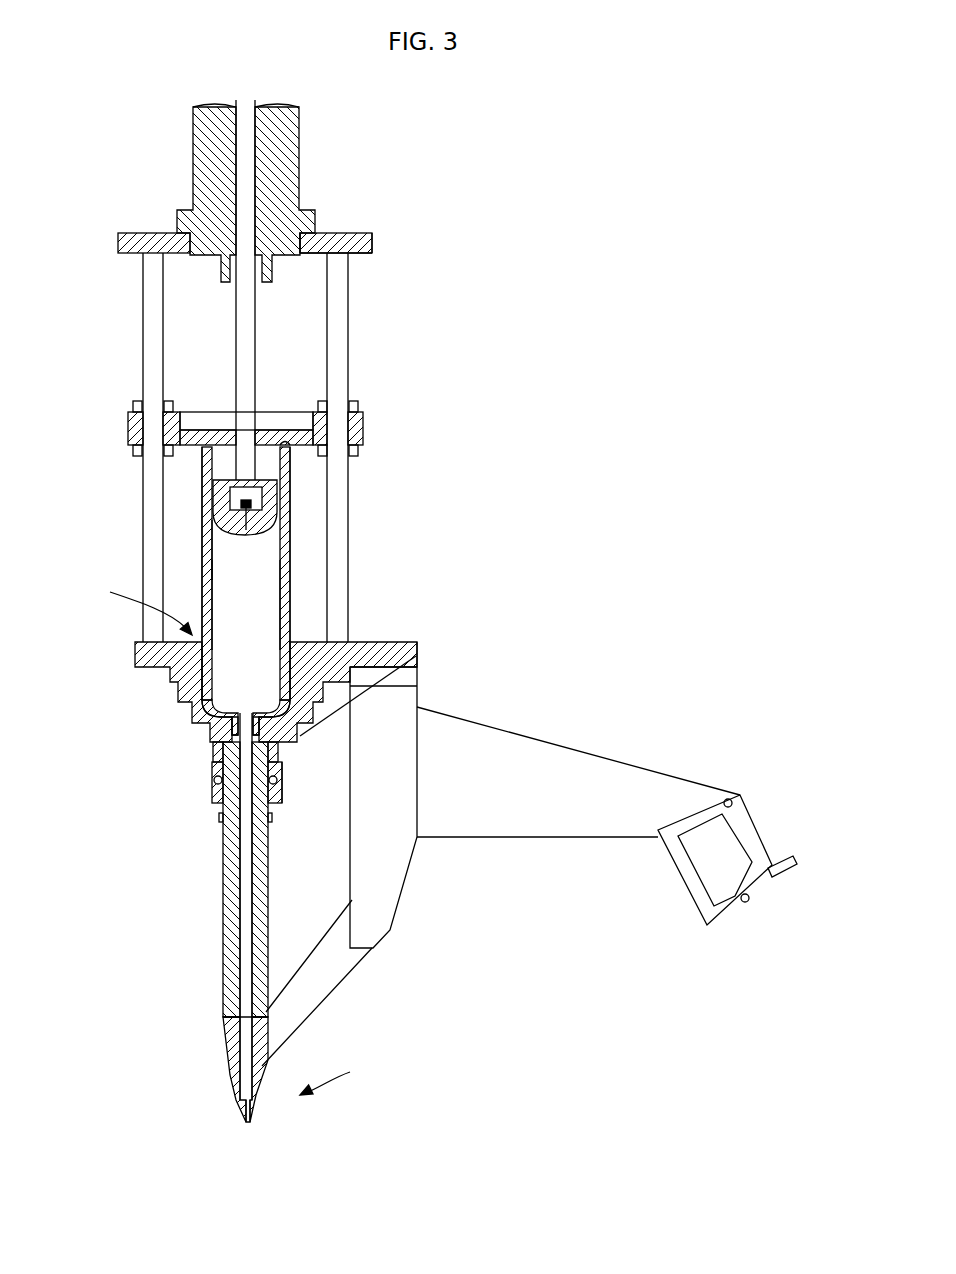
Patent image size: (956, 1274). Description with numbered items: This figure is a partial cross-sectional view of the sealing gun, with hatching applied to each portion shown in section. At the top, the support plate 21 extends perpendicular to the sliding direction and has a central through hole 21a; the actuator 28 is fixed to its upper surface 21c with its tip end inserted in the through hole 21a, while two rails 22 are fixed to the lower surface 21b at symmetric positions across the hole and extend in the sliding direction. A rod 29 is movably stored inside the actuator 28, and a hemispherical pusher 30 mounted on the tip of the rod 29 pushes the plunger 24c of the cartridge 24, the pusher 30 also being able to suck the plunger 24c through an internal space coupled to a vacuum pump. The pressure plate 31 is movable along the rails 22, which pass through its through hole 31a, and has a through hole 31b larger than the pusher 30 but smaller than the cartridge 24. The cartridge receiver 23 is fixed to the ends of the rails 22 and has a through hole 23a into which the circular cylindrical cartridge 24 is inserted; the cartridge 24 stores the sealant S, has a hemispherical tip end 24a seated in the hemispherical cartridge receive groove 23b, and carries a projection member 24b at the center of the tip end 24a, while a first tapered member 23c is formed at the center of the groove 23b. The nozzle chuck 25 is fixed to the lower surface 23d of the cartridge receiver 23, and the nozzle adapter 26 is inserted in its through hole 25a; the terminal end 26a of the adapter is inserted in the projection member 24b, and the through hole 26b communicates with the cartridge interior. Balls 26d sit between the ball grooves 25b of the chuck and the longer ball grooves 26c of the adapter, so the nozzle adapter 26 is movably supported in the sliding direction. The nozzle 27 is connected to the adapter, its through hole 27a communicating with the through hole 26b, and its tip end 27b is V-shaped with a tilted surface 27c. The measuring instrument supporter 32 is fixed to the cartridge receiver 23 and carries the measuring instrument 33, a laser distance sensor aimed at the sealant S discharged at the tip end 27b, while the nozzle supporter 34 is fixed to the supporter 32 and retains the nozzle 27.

The support plate 21 is at (135, 233).
The through hole 21a is at (301, 240).
The lower surface 21b is at (372, 254).
The upper surface 21c is at (372, 236).
The rails 22 is at (143, 400).
The cartridge receiver 23 is at (136, 656).
The through hole 23a is at (127, 604).
The cartridge receive groove 23b is at (362, 682).
The first tapered member 23c is at (224, 750).
The lower surface 23d is at (274, 758).
The cartridge 24 is at (287, 540).
The tip end 24a is at (222, 713).
The projection member 24b is at (262, 728).
The plunger 24c is at (203, 550).
The nozzle chuck 25 is at (213, 776).
The through hole 25a is at (278, 802).
The ball grooves 25b is at (216, 786).
The nozzle adapter 26 is at (224, 952).
The terminal end 26a is at (302, 734).
The through hole 26b is at (254, 870).
The ball grooves 26c is at (226, 828).
The balls 26d is at (221, 822).
The nozzle 27 is at (228, 1062).
The through hole 27a is at (235, 1018).
The tip end 27b is at (344, 1070).
The tilted surface 27c is at (242, 1120).
The actuator 28 is at (193, 140).
The rod 29 is at (236, 300).
The pusher 30 is at (203, 470).
The pressure plate 31 is at (135, 428).
The through hole 31a is at (165, 404).
The through hole 31b is at (285, 447).
The measuring instrument supporter 32 is at (500, 724).
The measuring instrument 33 is at (762, 856).
The nozzle supporter 34 is at (342, 968).
The sealant S is at (250, 640).